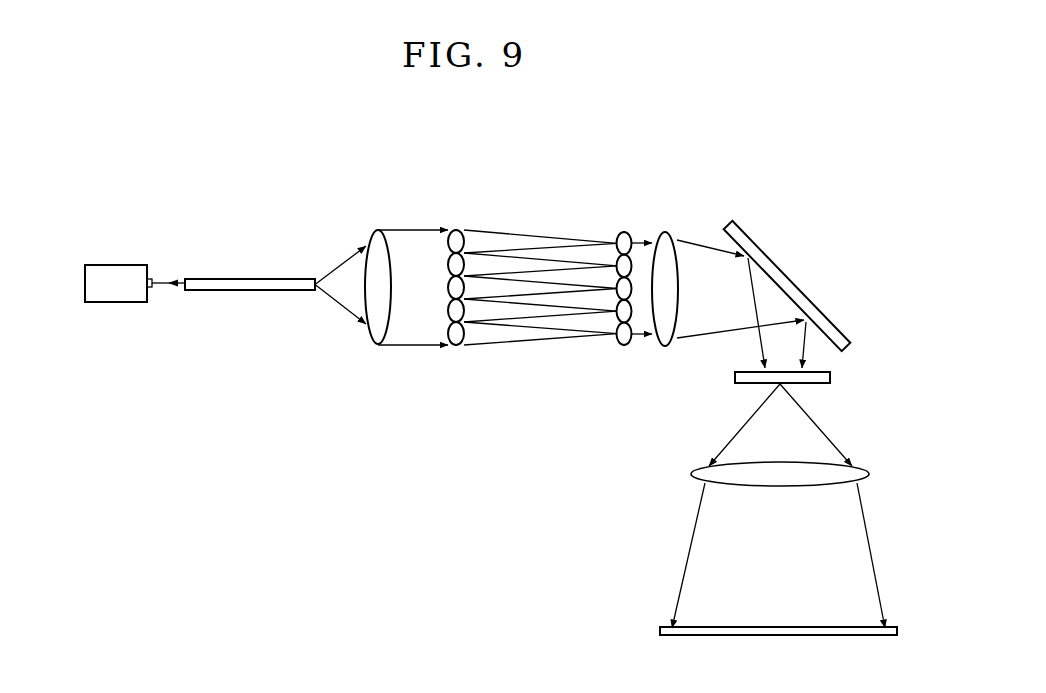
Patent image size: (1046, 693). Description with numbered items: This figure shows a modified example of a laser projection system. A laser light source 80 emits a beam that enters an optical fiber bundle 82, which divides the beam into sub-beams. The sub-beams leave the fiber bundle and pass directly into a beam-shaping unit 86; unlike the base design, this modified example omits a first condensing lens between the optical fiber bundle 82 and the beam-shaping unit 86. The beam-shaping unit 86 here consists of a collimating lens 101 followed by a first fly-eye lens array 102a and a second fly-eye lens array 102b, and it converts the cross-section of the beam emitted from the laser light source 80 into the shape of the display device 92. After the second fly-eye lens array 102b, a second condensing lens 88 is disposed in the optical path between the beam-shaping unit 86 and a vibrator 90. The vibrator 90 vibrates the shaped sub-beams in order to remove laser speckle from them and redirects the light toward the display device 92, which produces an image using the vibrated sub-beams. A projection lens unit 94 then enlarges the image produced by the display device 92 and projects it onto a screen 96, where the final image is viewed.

The laser light source 80 is at (122, 265).
The optical fiber bundle 82 is at (250, 277).
The beam-shaping unit 86 is at (507, 341).
The second condensing lens 88 is at (665, 347).
The vibrator 90 is at (783, 274).
The display device 92 is at (832, 377).
The projection lens unit 94 is at (870, 475).
The screen 96 is at (660, 631).
The collimating lens 101 is at (378, 345).
The first fly-eye lens array 102a is at (455, 345).
The second fly-eye lens array 102b is at (623, 322).